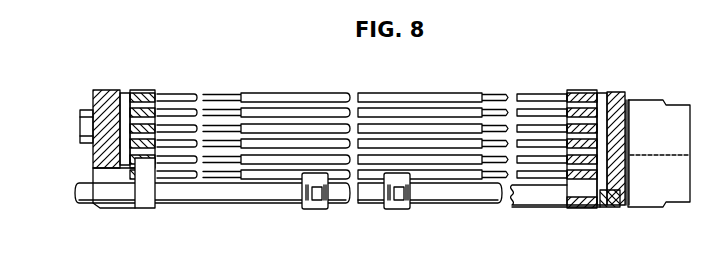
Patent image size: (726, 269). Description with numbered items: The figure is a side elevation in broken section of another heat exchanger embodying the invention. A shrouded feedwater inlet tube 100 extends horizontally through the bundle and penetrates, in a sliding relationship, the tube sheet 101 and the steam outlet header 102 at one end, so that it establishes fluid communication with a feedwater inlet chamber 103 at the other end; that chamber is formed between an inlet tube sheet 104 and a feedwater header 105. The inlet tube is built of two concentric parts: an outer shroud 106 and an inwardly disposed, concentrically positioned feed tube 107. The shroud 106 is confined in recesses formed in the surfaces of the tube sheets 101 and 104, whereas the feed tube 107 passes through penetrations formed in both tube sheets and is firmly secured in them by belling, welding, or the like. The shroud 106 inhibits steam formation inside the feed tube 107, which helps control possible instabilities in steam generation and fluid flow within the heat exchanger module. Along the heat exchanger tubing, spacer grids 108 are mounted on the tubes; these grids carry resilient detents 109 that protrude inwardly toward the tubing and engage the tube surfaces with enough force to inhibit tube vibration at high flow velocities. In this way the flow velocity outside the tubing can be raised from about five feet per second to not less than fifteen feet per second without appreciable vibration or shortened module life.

The shrouded feedwater inlet tube 100 is at (452, 195).
The tube sheet 101 is at (142, 89).
The steam outlet header 102 is at (100, 150).
The feedwater inlet chamber 103 is at (608, 207).
The inlet tube sheet 104 is at (590, 130).
The feedwater header 105 is at (615, 102).
The shroud 106 is at (530, 193).
The feed tube 107 is at (572, 200).
The spacer grids 108 is at (301, 209).
The resilient detents 109 is at (315, 200).